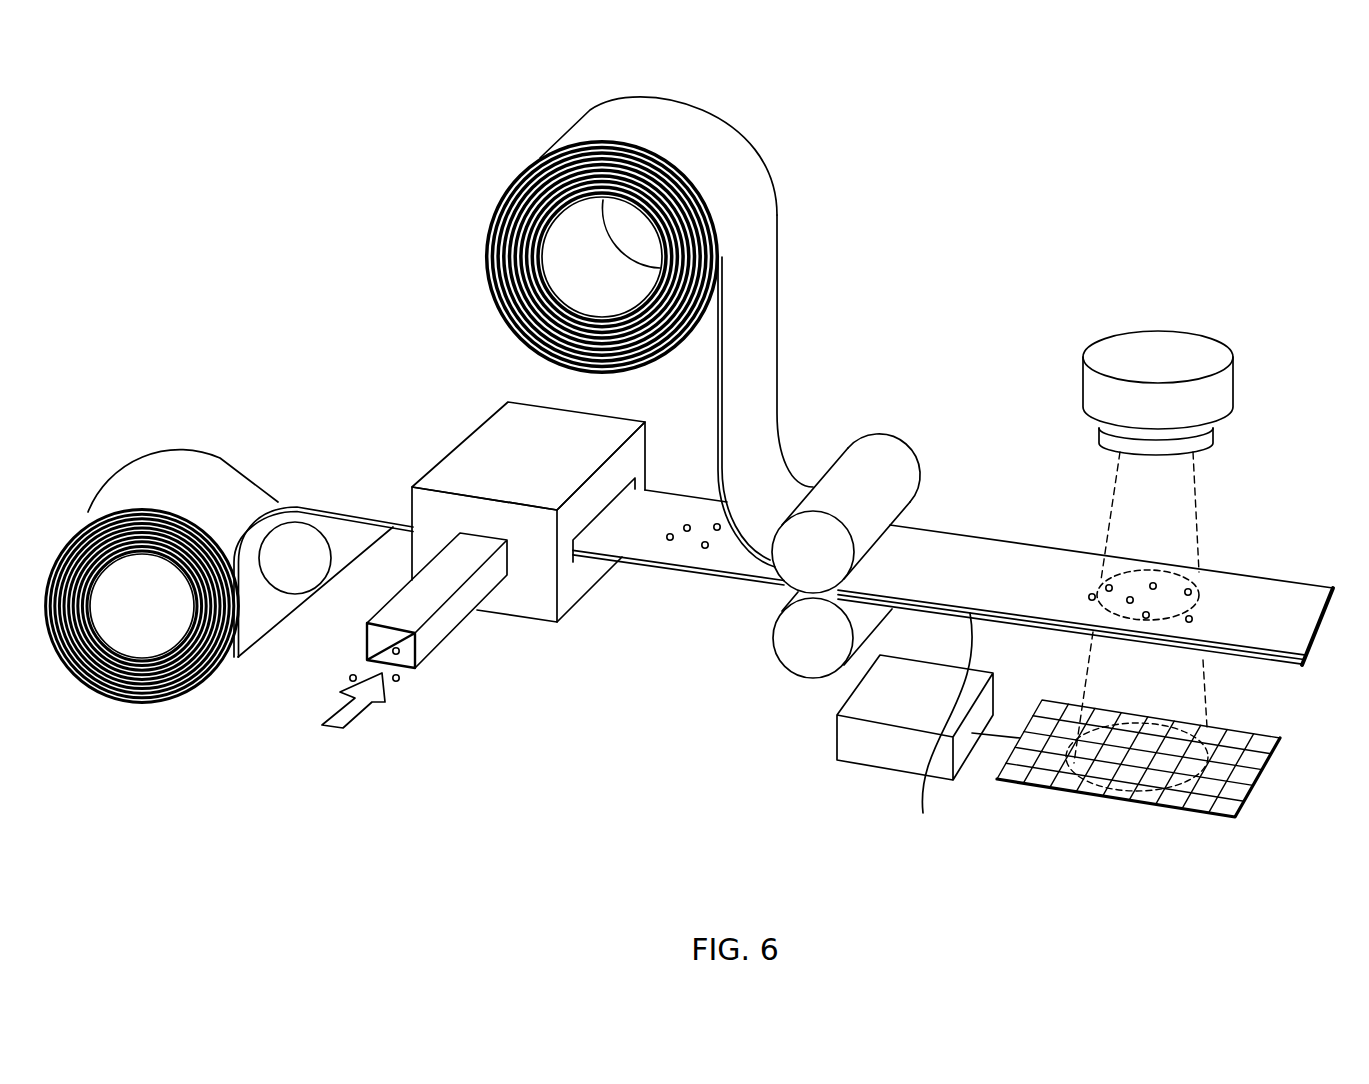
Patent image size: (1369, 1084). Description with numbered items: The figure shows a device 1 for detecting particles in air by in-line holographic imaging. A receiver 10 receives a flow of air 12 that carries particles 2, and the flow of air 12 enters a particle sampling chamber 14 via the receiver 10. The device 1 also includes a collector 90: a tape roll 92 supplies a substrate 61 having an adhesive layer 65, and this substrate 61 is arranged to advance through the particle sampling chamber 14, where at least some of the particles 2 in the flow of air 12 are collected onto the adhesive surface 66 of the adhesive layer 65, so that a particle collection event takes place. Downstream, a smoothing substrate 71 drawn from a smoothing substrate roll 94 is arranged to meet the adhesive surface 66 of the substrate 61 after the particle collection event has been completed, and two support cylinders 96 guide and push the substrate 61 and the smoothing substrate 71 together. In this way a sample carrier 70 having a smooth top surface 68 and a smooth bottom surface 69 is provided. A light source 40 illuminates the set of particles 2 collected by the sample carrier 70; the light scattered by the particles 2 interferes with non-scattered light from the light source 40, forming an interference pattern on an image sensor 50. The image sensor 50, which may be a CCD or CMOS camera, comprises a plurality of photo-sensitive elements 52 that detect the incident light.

The device 1 is at (1312, 328).
The particles 2 is at (398, 680).
The receiver 10 is at (443, 632).
The flow of air 12 is at (365, 712).
The particle sampling chamber 14 is at (504, 412).
The light source 40 is at (1199, 341).
The image sensor 50 is at (1061, 807).
The photo-sensitive elements 52 is at (1102, 770).
The substrate 61 is at (402, 530).
The adhesive layer 65 is at (363, 473).
The adhesive surface 66 is at (404, 465).
The smooth top surface 68 is at (1012, 548).
The smooth bottom surface 69 is at (963, 728).
The sample carrier 70 is at (1262, 603).
The smoothing substrate 71 is at (762, 418).
The collector 90 is at (907, 108).
The tape roll 92 is at (243, 657).
The smoothing substrate roll 94 is at (699, 122).
The support cylinders 96 is at (286, 564).